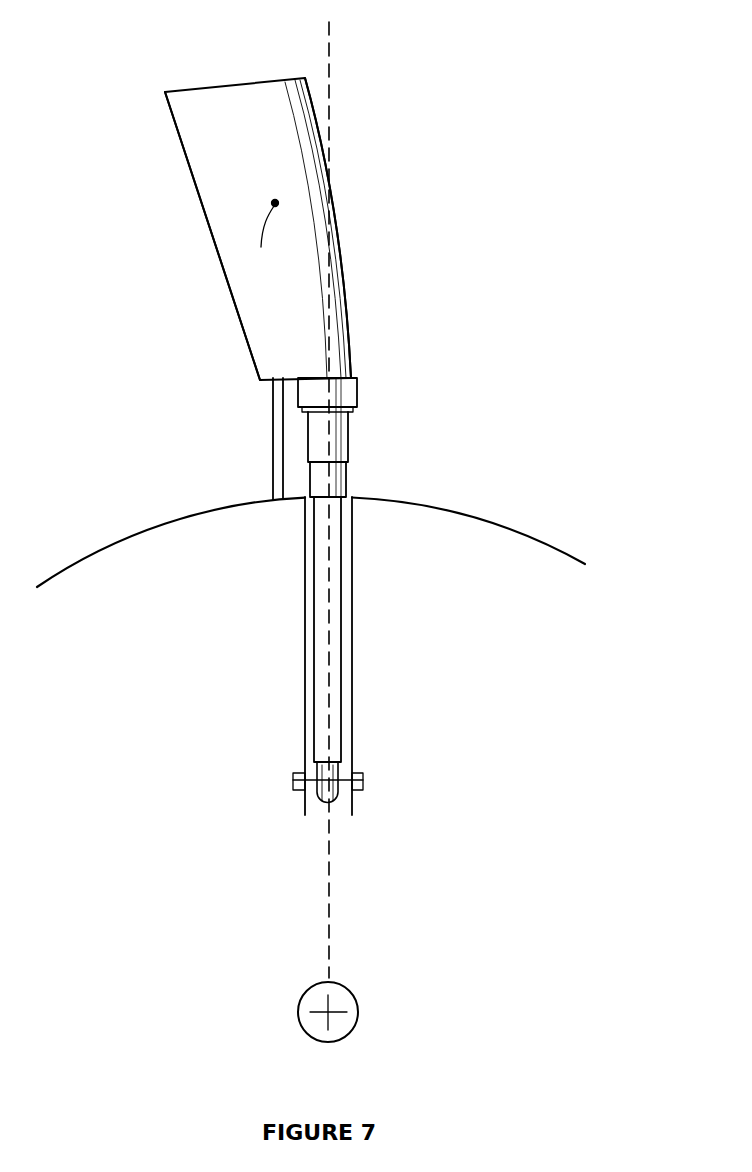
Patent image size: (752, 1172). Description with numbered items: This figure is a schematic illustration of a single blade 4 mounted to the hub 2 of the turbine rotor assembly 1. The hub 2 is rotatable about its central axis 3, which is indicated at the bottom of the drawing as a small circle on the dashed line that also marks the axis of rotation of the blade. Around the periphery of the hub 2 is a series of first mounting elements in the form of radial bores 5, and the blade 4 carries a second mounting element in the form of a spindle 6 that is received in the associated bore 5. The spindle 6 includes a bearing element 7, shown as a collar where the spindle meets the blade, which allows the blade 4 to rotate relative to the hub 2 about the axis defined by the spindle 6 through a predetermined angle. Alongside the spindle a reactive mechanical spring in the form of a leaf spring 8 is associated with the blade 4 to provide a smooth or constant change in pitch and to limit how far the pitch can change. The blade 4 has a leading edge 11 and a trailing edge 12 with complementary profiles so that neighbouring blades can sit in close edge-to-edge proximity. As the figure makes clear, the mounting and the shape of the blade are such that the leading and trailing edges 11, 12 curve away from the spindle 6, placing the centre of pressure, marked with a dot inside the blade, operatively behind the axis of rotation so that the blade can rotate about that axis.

The turbine rotor assembly 1 is at (505, 97).
The hub 2 is at (497, 550).
The central axis 3 is at (328, 1012).
The blade 4 is at (233, 110).
The radial bore 5 is at (312, 570).
The spindle 6 is at (342, 632).
The bearing element 7 is at (357, 390).
The leaf spring 8 is at (272, 434).
The leading edge 11 is at (334, 204).
The trailing edge 12 is at (208, 207).